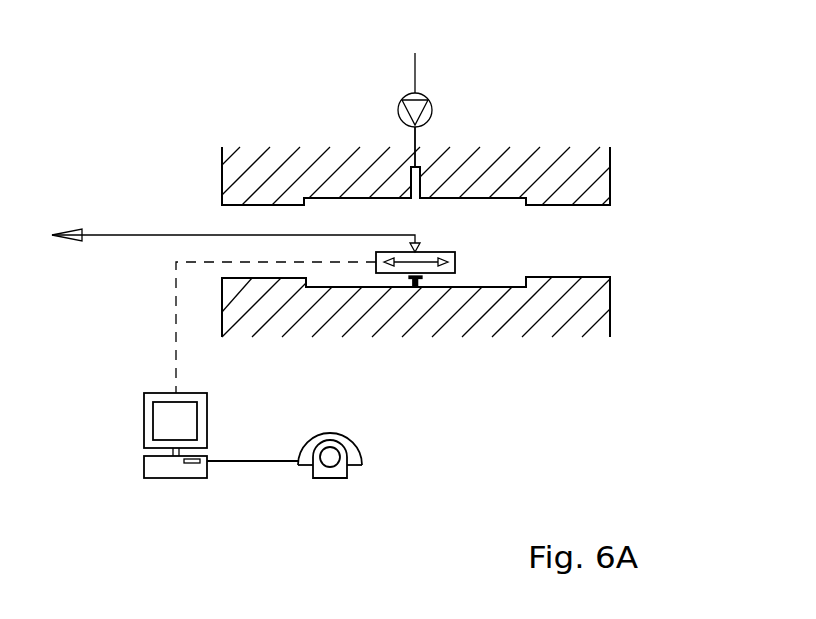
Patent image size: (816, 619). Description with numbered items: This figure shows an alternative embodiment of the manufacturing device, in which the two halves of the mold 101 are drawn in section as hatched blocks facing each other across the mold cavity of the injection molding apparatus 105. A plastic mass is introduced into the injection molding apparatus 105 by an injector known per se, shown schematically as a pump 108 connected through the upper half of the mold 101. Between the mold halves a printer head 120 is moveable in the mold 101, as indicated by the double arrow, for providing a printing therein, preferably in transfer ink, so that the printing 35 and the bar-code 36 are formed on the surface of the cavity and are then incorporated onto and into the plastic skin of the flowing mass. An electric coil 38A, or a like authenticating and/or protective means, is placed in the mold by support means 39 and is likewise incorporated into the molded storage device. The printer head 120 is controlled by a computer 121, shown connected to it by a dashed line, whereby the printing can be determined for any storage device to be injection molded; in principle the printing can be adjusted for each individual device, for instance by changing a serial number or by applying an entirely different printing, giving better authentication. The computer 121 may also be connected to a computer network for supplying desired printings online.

The mold 101 is at (592, 180).
The injection molding apparatus 105 is at (522, 140).
The pump 108 is at (423, 95).
The printer head 120 is at (455, 258).
The printing 35 is at (505, 271).
The bar-code 36 is at (505, 271).
The electric coil 38A is at (410, 288).
The support means 39 is at (420, 288).
The computer 121 is at (156, 478).